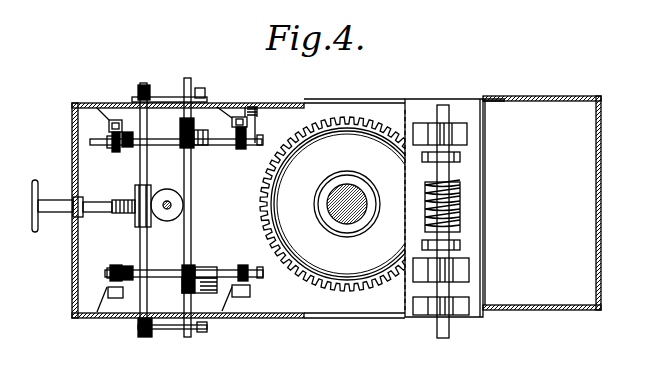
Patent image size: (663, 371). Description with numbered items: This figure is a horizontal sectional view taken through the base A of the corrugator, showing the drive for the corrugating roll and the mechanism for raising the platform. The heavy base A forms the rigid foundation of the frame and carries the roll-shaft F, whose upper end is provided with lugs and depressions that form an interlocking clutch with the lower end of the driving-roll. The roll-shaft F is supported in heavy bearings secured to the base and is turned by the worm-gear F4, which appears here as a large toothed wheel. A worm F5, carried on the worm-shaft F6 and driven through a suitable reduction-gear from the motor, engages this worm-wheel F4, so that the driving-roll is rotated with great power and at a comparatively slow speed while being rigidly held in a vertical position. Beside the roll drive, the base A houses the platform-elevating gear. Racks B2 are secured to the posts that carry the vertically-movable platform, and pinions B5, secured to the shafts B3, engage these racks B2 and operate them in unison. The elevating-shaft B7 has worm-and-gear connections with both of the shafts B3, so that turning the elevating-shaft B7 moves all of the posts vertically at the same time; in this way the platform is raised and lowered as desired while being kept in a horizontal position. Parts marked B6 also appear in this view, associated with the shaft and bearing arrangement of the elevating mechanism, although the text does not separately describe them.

The base A is at (336, 217).
The racks B2 is at (110, 130).
The shafts B3 is at (238, 150).
The pinions B5 is at (115, 150).
The bearing collar B6 is at (180, 145).
The elevating-shaft B7 is at (191, 195).
The roll-shaft F is at (351, 216).
The worm-gear F4 is at (370, 278).
The worm F5 is at (450, 202).
The worm-shaft F6 is at (447, 325).